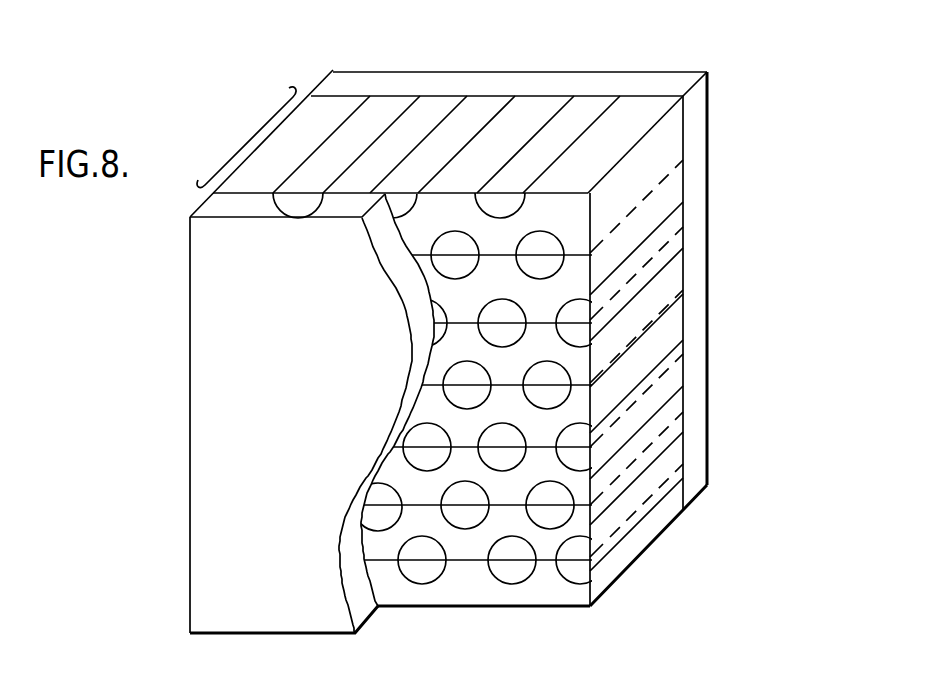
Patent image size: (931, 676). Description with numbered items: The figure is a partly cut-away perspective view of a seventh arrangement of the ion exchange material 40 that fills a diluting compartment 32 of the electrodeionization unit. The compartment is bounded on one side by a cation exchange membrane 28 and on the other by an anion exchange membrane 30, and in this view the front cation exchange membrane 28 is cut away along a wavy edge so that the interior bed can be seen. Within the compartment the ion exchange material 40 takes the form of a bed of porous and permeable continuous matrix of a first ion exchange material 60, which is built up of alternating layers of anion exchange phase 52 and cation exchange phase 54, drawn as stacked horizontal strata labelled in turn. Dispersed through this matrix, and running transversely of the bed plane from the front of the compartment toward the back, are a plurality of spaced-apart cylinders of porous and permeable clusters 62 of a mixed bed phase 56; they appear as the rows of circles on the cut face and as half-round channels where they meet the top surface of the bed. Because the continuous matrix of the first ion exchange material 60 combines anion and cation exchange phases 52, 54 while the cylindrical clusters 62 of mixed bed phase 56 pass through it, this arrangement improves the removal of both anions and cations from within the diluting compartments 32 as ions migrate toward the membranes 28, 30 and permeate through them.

The cation exchange membrane 28 is at (205, 403).
The anion exchange membrane 30 is at (613, 84).
The diluting compartment 32 is at (250, 131).
The ion exchange material 40 is at (570, 618).
The anion exchange phase 52 is at (574, 225).
The cation exchange phase 54 is at (559, 311).
The mixed bed phase 56 is at (441, 266).
The first ion exchange material 60 is at (412, 229).
The clusters 62 is at (462, 535).